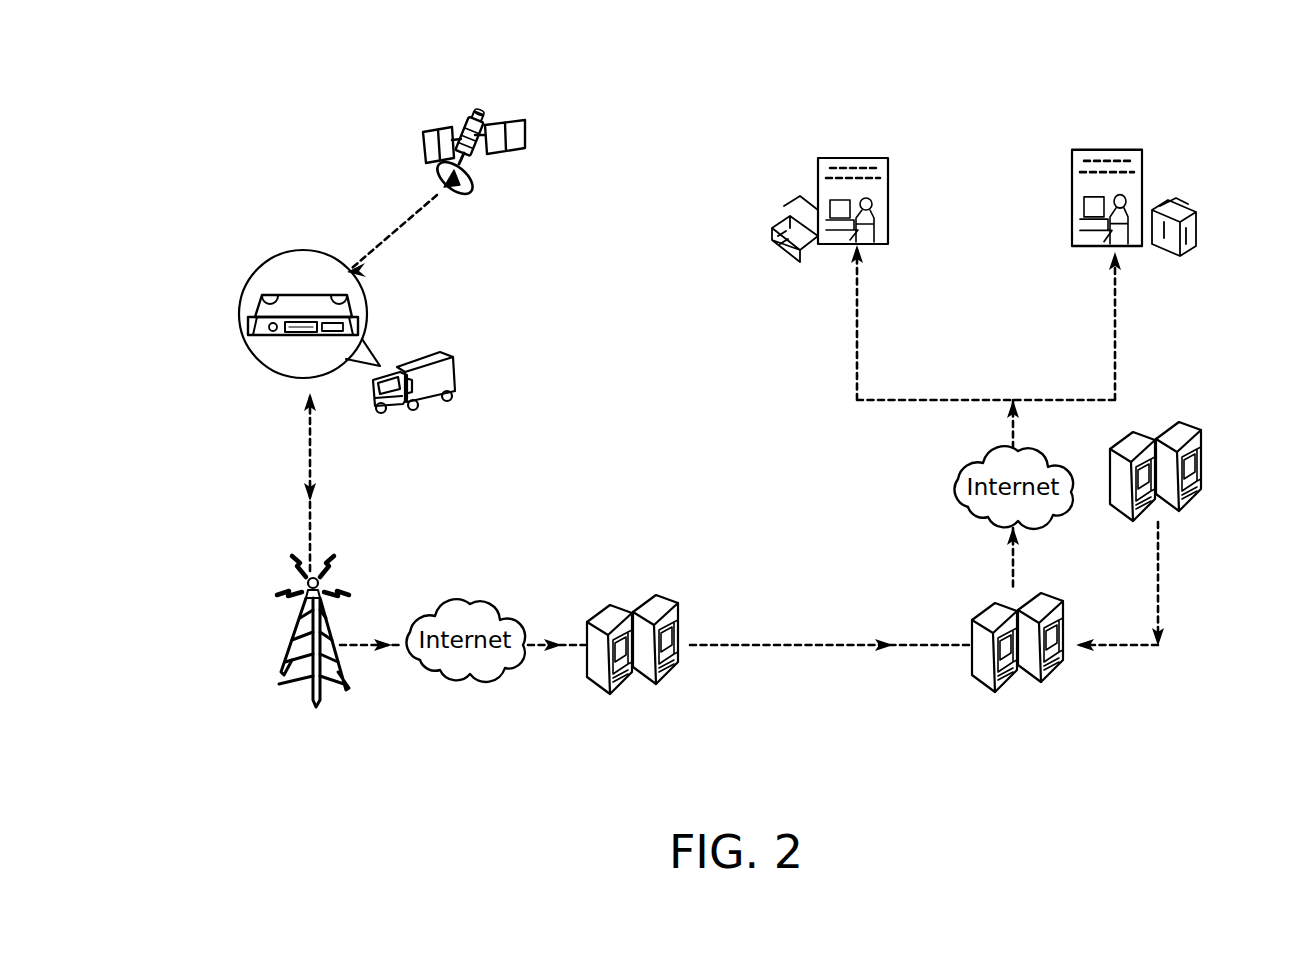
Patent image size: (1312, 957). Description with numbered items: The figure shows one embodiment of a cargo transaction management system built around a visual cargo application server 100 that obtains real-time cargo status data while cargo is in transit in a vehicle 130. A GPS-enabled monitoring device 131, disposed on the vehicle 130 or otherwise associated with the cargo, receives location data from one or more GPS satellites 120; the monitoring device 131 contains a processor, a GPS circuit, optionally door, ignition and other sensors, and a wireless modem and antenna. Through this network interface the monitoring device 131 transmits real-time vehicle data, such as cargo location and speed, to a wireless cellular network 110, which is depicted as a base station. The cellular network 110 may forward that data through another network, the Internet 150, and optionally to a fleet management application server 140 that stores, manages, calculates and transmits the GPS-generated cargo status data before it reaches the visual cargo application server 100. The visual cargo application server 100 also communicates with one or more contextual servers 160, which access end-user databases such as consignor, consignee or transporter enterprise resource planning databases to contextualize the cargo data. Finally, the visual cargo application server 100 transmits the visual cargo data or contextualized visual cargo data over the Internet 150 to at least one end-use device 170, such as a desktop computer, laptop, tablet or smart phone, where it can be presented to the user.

The visual cargo application server 100 is at (1038, 684).
The cellular network 110 is at (341, 703).
The GPS satellite 120 is at (478, 108).
The vehicle 130 is at (447, 348).
The GPS-enabled monitoring device 131 is at (312, 250).
The fleet management application server 140 is at (636, 696).
The Internet 150 is at (470, 679).
The contextual server 160 is at (1192, 420).
The end-use device 170 is at (1072, 198).